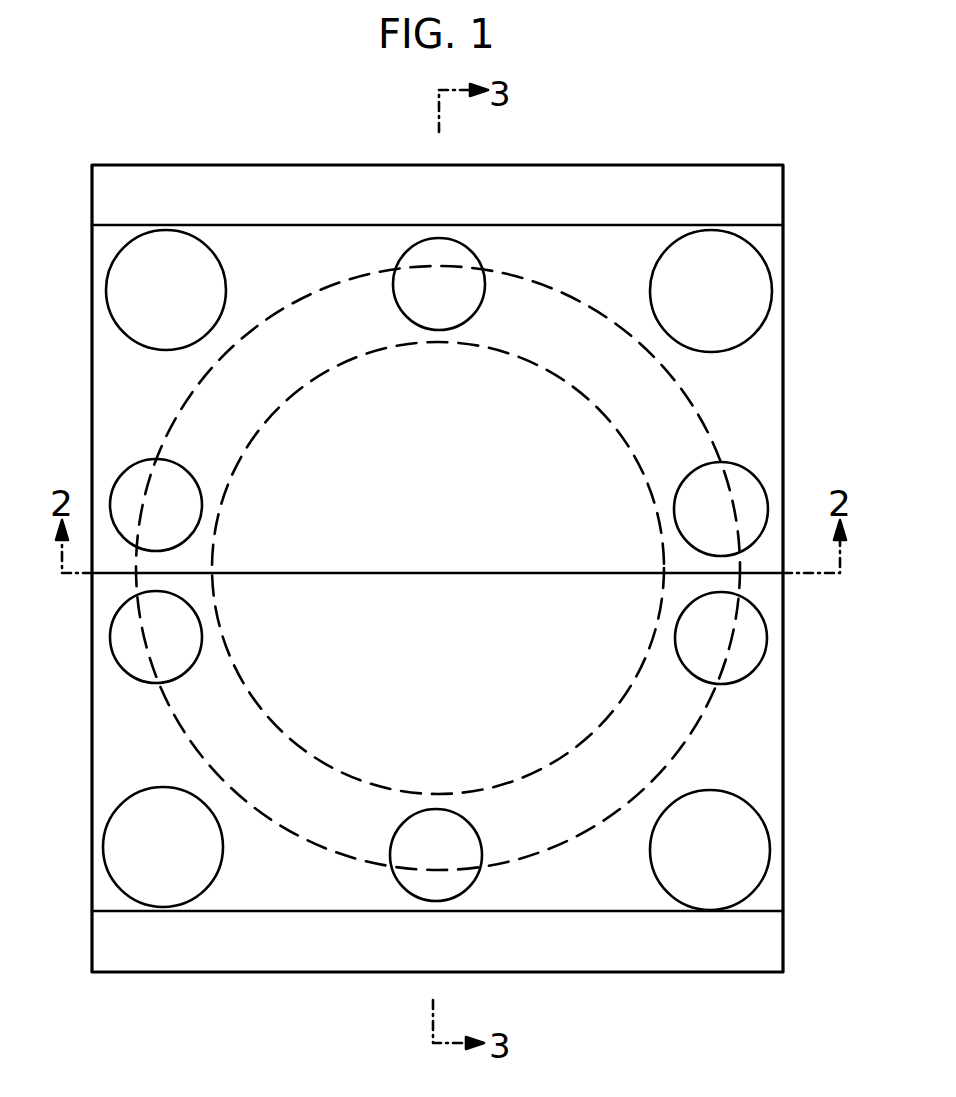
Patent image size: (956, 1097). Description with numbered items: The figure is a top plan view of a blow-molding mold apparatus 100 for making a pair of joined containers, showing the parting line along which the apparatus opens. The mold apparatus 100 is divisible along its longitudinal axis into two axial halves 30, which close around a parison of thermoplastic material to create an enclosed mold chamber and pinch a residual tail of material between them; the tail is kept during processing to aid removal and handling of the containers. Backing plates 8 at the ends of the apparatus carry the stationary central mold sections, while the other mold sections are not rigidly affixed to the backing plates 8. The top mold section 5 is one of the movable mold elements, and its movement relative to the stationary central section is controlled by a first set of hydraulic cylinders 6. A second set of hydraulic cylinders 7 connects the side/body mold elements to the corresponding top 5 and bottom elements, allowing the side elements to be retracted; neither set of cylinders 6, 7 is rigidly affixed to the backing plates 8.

The mold apparatus 100 is at (797, 182).
The backing plates 8 is at (293, 178).
The axial halves of the molding apparatus 30 is at (800, 382).
The top mold section 5 is at (432, 477).
The first set of hydraulic cylinders 6 is at (117, 270).
The second set of hydraulic cylinders 7 is at (418, 250).